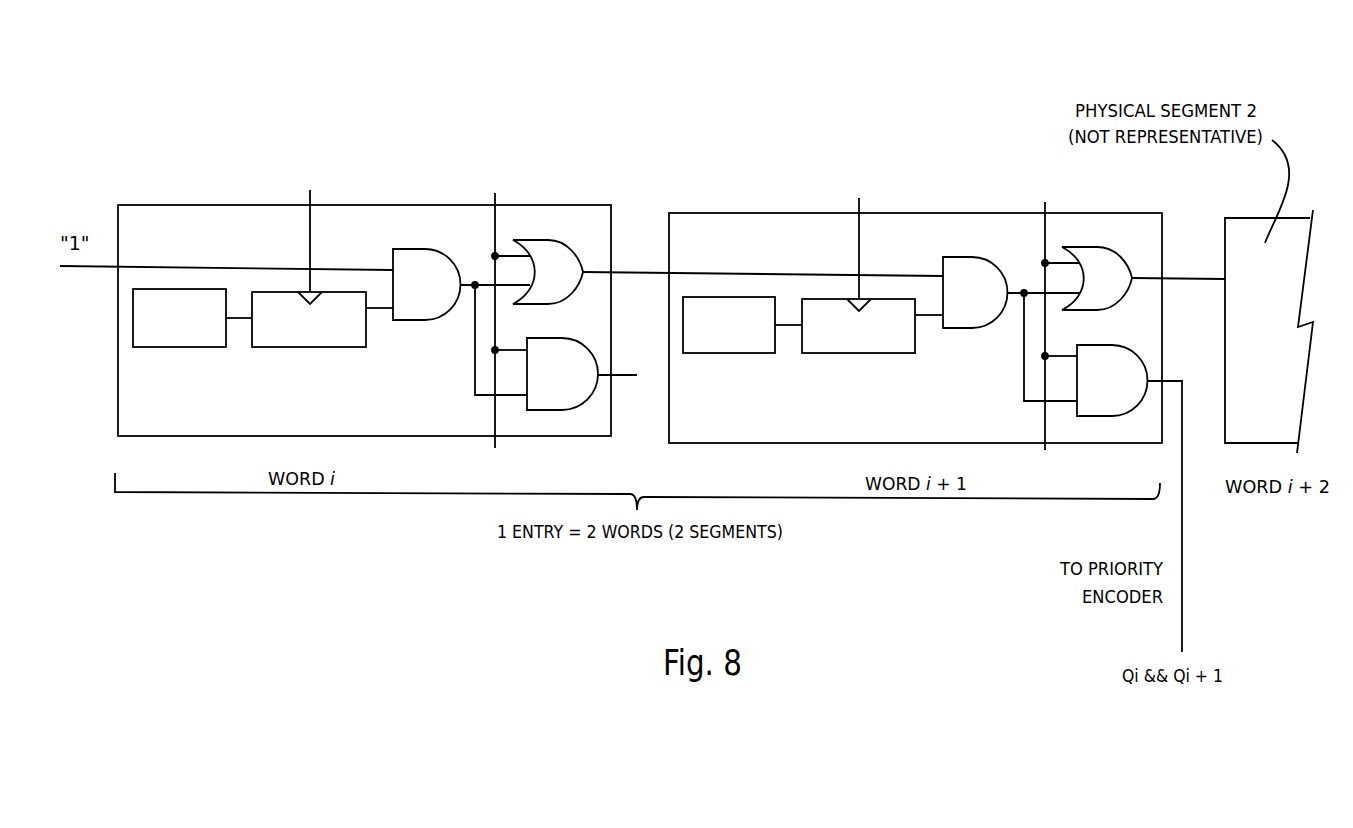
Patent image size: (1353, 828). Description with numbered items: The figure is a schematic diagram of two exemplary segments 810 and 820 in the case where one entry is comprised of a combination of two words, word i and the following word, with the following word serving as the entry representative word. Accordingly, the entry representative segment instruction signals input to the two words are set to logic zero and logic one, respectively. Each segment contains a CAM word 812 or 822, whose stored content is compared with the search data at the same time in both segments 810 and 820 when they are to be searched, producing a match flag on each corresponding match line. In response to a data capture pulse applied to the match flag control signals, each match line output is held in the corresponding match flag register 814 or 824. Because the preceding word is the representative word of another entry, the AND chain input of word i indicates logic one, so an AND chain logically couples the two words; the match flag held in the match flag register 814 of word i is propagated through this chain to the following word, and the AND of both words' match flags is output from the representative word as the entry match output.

The segment 810 is at (383, 118).
The CAM word 812 is at (182, 289).
The match flag register 814 is at (355, 347).
The segment 820 is at (843, 127).
The CAM word 822 is at (738, 297).
The match flag register 824 is at (905, 353).